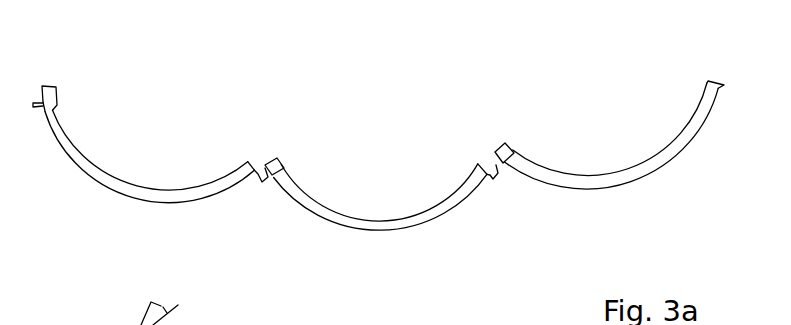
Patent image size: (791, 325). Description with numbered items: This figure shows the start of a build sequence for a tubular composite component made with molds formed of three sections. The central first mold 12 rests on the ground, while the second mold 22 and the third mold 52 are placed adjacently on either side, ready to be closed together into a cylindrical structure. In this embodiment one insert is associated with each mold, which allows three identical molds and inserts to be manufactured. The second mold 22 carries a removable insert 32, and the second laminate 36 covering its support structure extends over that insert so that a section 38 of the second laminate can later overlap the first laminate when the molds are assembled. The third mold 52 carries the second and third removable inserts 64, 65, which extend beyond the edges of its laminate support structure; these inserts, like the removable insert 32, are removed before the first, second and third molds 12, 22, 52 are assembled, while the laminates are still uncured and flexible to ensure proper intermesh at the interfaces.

The first mold 12 is at (373, 221).
The second mold 22 is at (615, 176).
The removable insert 32 is at (499, 153).
The second laminate 36 is at (622, 173).
The section of the second laminate 38 is at (507, 150).
The third mold 52 is at (122, 182).
The second removable insert 64 is at (280, 158).
The third removable insert 65 is at (55, 89).